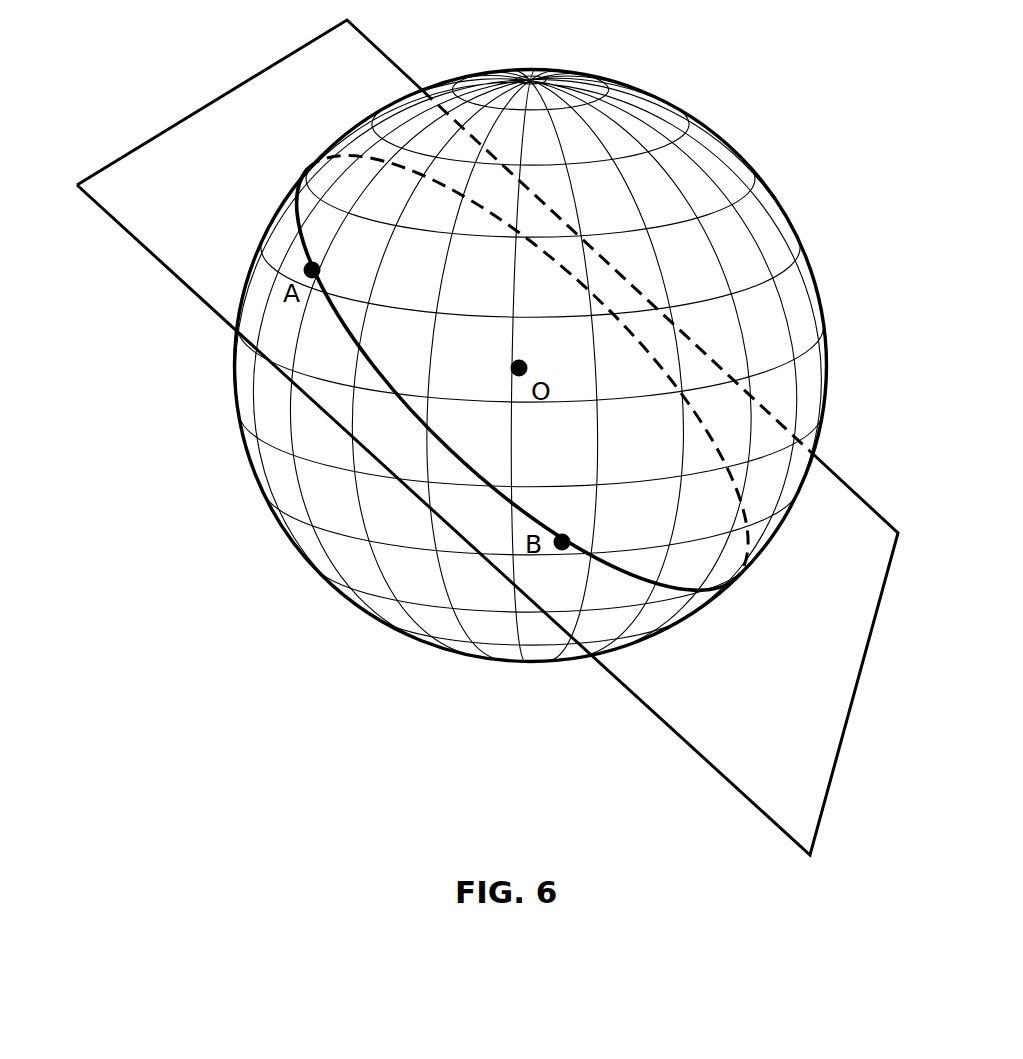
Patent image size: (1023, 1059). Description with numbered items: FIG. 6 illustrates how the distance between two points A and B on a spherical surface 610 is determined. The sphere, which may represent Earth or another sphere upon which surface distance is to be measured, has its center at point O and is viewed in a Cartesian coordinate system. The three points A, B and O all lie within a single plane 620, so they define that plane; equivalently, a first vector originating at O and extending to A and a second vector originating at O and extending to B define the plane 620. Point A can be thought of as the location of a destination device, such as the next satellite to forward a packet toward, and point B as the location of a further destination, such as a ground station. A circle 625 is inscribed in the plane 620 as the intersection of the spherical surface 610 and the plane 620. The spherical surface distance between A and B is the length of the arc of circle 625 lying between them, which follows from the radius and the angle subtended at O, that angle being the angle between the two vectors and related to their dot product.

The spherical surface 610 is at (740, 148).
The plane 620 is at (870, 503).
The circle 625 is at (300, 236).